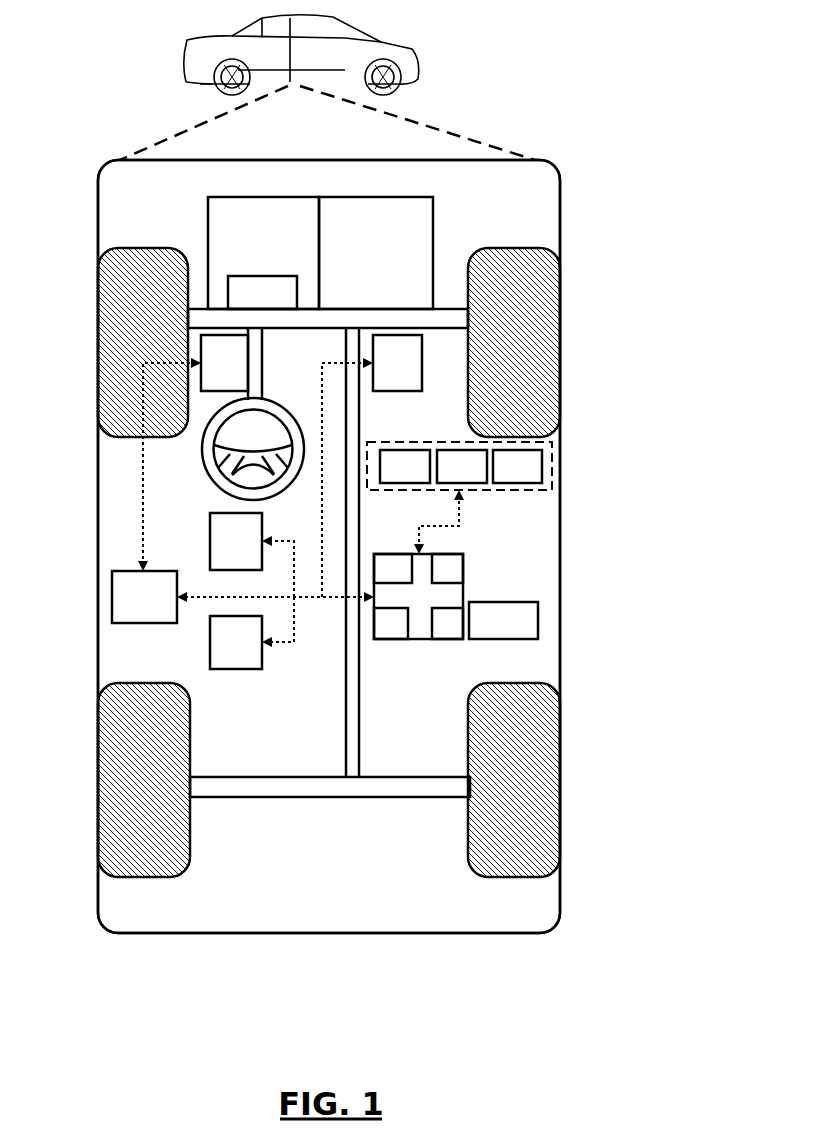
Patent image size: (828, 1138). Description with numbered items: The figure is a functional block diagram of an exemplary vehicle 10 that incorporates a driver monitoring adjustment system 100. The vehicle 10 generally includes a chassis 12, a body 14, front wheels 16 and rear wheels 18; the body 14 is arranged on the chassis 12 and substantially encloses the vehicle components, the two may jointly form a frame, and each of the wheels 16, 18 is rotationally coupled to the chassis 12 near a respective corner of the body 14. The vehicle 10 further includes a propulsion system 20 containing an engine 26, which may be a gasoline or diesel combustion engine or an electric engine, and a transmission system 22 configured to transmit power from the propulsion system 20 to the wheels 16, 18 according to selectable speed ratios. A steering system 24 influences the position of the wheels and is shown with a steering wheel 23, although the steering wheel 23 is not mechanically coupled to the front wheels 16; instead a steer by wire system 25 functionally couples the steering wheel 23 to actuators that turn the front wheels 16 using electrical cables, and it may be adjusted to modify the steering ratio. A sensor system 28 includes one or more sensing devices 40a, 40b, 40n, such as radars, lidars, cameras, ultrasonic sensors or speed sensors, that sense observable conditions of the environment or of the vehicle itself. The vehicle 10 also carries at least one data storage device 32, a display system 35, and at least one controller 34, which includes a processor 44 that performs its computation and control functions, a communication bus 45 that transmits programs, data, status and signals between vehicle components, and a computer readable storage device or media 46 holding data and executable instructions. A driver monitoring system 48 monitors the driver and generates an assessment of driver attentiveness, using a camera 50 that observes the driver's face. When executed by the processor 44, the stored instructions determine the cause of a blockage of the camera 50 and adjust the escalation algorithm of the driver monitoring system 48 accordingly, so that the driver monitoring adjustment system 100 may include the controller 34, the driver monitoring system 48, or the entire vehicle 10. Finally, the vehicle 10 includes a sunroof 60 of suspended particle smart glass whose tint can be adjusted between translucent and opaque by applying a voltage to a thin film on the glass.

The vehicle 10 is at (423, 60).
The driver monitoring adjustment system 100 is at (608, 238).
The chassis 12 is at (346, 745).
The body 14 is at (97, 641).
The front wheels 16 is at (143, 248).
The rear wheels 18 is at (160, 877).
The propulsion system 20 is at (252, 265).
The transmission system 22 is at (364, 265).
The steering wheel 23 is at (241, 433).
The steering system 24 is at (263, 398).
The steer by wire system 25 is at (224, 551).
The engine 26 is at (251, 302).
The sensor system 28 is at (400, 442).
The data storage device 32 is at (491, 630).
The controller 34 is at (408, 606).
The display system 35 is at (385, 372).
The sensing device 40a is at (388, 476).
The sensing device 40b is at (445, 476).
The sensing device 40n is at (500, 476).
The processor 44 is at (435, 578).
The communication bus 45 is at (381, 578).
The computer readable storage device or media 46 is at (435, 633).
The driver monitoring system 48 is at (132, 606).
The camera 50 is at (212, 372).
The sunroof 60 is at (224, 652).